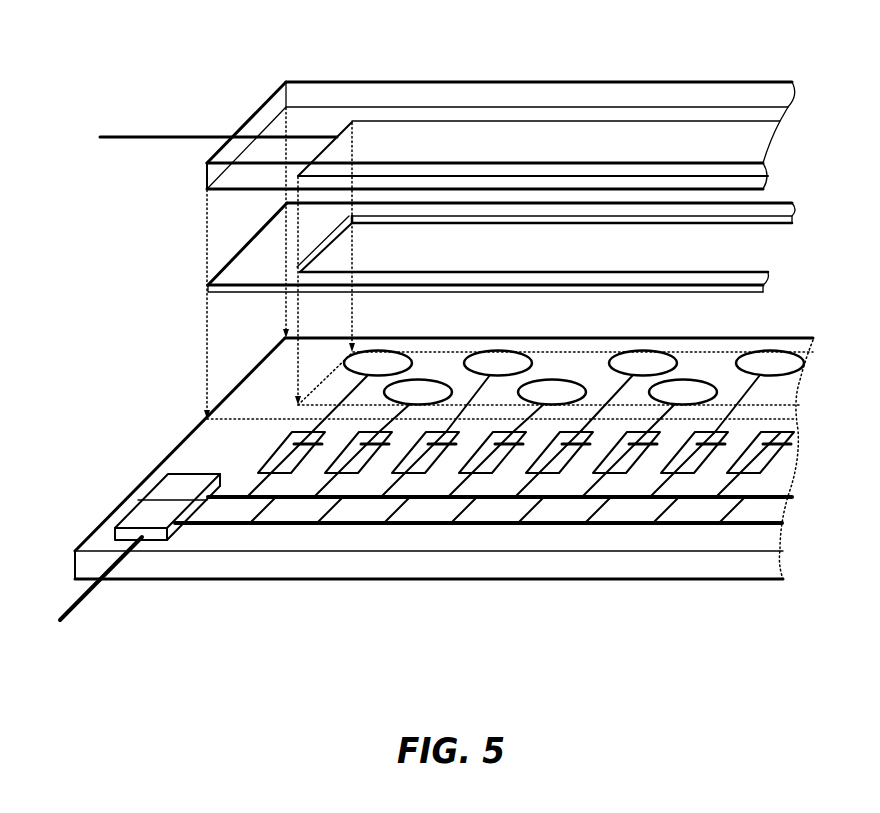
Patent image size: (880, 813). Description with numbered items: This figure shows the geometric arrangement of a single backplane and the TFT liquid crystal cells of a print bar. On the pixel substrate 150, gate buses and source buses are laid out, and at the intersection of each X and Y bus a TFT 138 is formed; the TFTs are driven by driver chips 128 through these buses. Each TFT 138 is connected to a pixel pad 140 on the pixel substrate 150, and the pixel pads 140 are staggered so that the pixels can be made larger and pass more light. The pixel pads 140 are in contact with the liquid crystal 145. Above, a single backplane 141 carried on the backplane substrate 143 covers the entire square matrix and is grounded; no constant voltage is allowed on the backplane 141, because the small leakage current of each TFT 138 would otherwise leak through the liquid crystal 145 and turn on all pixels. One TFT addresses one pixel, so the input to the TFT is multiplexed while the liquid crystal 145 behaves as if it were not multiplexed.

The driver chip 128 is at (180, 483).
The TFT 138 is at (287, 453).
The pixel pad 140 is at (378, 366).
The backplane 141 is at (353, 121).
The backplane substrate 143 is at (506, 81).
The liquid crystal 145 is at (380, 245).
The pixel substrate 150 is at (523, 565).